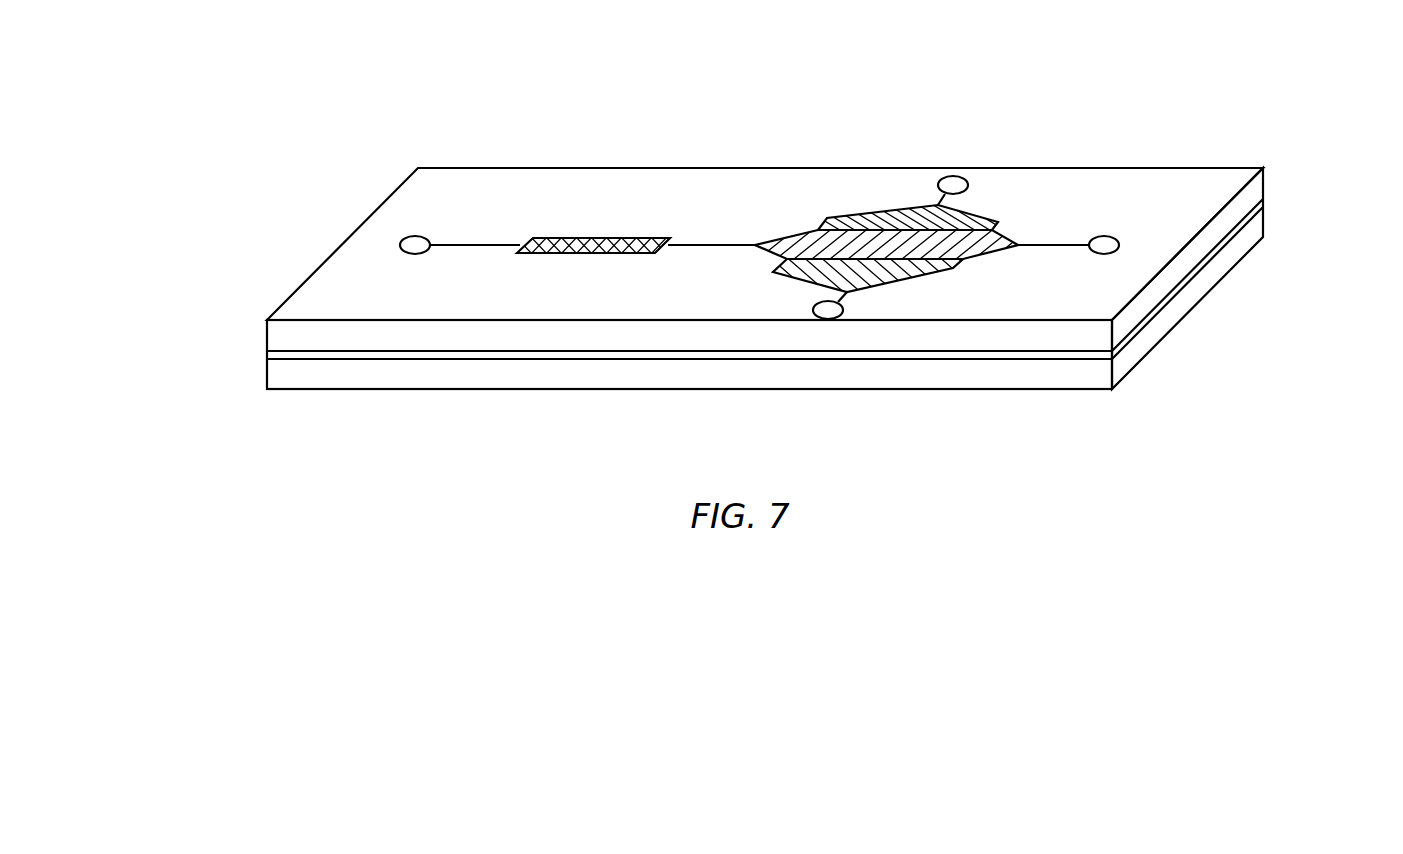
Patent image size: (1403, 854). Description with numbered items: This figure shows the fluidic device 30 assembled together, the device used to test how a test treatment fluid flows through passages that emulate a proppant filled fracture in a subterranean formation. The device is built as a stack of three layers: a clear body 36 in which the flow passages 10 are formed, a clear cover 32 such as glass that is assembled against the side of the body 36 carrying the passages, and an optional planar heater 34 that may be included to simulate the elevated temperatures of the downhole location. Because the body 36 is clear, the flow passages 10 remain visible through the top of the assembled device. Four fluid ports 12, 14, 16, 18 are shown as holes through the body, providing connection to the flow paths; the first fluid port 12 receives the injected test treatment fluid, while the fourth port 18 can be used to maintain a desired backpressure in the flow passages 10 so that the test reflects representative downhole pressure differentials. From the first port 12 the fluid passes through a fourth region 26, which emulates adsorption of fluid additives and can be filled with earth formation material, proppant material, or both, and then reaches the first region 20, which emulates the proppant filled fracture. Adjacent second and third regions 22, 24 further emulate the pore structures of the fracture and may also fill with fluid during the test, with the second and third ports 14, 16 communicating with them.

The flow passages 10 is at (677, 152).
The first fluid port 12 is at (400, 242).
The second fluid port 14 is at (953, 176).
The third fluid port 16 is at (842, 315).
The fourth fluid port 18 is at (1103, 236).
The first region 20 is at (852, 240).
The second region 22 is at (887, 217).
The third region 24 is at (810, 273).
The fourth region 26 is at (568, 243).
The fluidic device 30 is at (1316, 108).
The cover 32 is at (266, 356).
The planar heater 34 is at (266, 374).
The body 36 is at (266, 334).